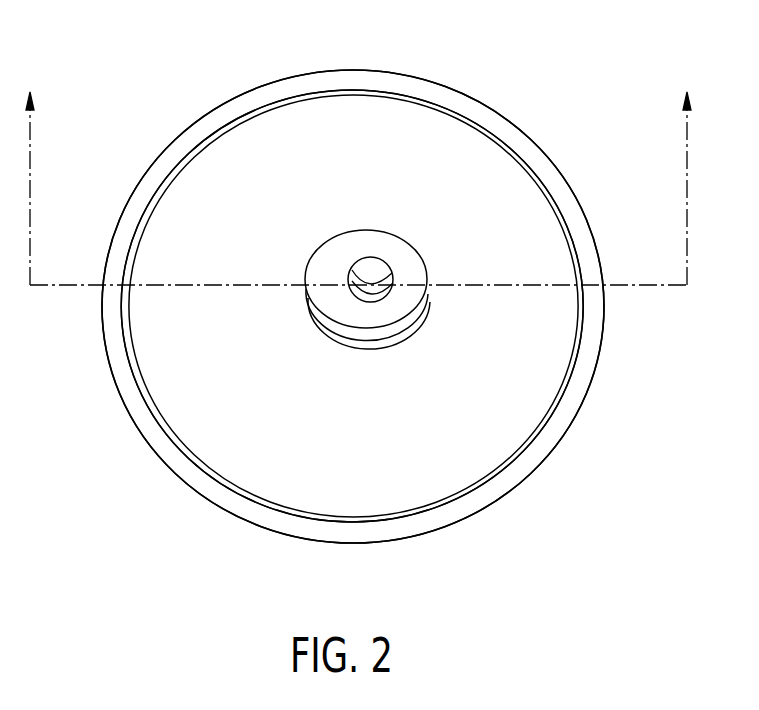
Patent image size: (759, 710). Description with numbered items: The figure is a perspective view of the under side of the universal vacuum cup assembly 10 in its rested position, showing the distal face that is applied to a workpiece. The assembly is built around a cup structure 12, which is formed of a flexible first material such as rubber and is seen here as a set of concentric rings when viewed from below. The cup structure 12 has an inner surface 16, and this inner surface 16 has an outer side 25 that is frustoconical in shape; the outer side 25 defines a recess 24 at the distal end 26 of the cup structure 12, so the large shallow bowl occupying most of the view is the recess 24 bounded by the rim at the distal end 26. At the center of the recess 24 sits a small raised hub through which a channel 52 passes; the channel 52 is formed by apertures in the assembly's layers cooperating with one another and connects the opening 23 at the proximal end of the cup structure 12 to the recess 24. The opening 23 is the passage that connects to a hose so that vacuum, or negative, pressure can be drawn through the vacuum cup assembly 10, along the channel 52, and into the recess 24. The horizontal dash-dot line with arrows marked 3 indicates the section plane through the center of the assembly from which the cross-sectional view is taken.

The section line 3- 3 is at (358, 168).
The vacuum cup assembly 10 is at (622, 310).
The cup structure 12 is at (572, 193).
The inner surface 16 is at (505, 358).
The opening 23 is at (373, 269).
The recess 24 is at (303, 445).
The outer side 25 is at (265, 472).
The distal end 26 is at (532, 482).
The channel 52 is at (371, 314).